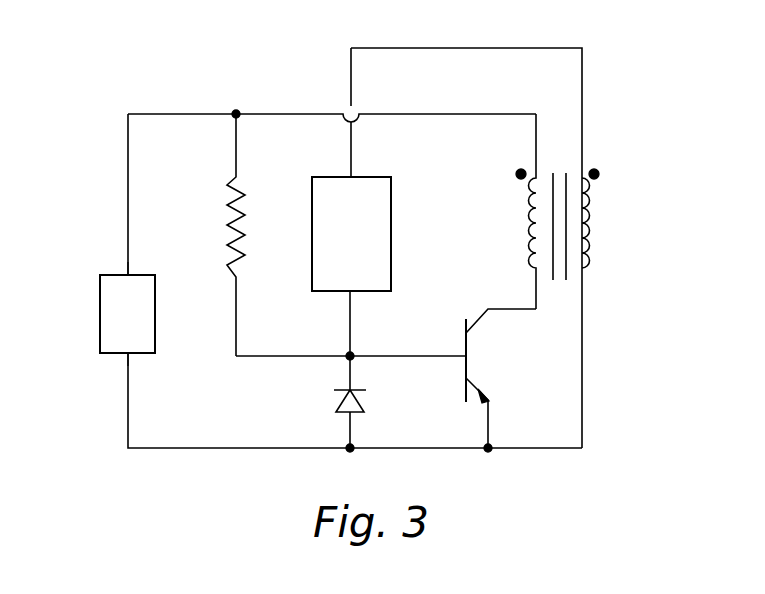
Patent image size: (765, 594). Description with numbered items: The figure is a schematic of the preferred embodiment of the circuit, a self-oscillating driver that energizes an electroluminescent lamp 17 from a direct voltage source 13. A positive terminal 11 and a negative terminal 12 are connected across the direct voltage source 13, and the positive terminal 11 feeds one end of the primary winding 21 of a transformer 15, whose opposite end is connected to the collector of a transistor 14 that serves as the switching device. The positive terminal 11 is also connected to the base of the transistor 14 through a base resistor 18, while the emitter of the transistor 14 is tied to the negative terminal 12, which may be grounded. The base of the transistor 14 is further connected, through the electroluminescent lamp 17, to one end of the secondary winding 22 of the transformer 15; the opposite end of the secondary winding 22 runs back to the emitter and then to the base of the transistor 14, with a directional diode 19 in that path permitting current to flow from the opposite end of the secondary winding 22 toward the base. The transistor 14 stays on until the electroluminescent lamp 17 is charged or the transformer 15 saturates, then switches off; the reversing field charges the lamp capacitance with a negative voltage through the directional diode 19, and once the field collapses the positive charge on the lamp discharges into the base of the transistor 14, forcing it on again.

The positive terminal 11 is at (125, 270).
The negative terminal 12 is at (121, 360).
The direct voltage source 13 is at (99, 308).
The transistor 14 is at (476, 361).
The transformer 15 is at (567, 211).
The electroluminescent lamp 17 is at (330, 177).
The base resistor 18 is at (228, 196).
The directional diode 19 is at (357, 413).
The primary winding 21 is at (534, 201).
The secondary winding 22 is at (584, 214).